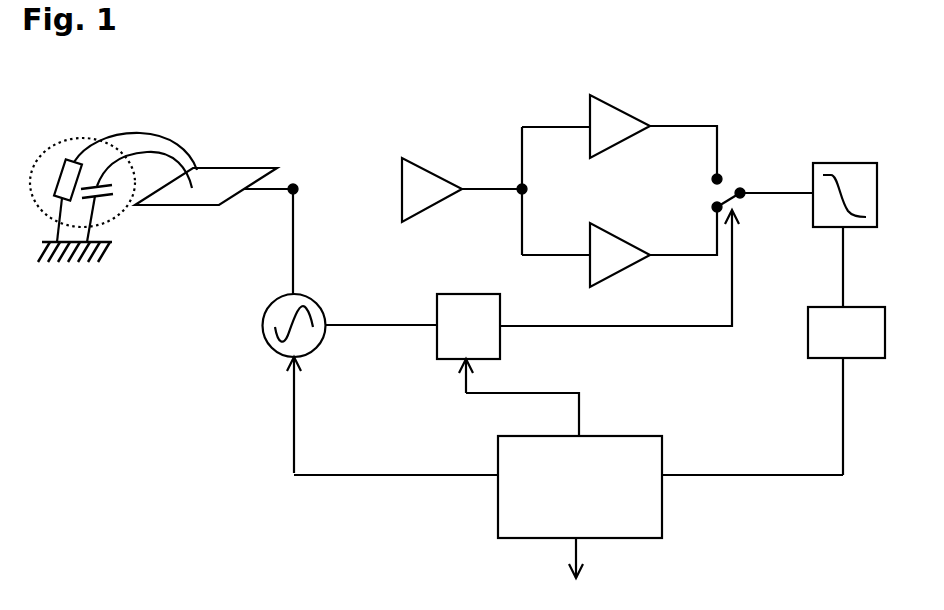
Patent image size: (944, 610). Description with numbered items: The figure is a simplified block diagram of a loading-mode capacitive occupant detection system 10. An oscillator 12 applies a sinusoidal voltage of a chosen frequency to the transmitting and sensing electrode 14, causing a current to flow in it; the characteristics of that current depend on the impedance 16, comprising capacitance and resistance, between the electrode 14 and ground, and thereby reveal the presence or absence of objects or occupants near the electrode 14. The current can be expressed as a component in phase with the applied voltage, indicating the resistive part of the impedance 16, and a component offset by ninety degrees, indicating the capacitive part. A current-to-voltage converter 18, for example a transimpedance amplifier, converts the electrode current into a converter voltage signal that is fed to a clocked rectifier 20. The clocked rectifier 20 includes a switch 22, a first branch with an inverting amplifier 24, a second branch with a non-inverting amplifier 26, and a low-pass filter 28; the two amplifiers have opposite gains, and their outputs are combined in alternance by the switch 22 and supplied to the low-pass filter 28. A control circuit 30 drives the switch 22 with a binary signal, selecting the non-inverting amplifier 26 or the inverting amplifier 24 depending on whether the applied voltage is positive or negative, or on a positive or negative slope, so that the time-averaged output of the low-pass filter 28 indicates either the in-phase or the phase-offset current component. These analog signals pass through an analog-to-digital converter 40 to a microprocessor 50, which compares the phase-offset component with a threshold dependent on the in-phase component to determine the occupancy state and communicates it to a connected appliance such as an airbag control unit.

The loading-mode capacitive occupant detection system 10 is at (184, 446).
The oscillator 12 is at (262, 322).
The transmitting and sensing electrode 14 is at (193, 207).
The impedance 16 is at (113, 215).
The current-to-voltage converter 18 is at (427, 166).
The clocked rectifier 20 is at (581, 184).
The switch 22 is at (745, 170).
The inverting amplifier 24 is at (620, 145).
The non-inverting amplifier 26 is at (623, 233).
The low-pass filter 28 is at (812, 214).
The control circuit 30 is at (465, 293).
The analog-to-digital converter 40 is at (808, 330).
The microprocessor 50 is at (663, 510).